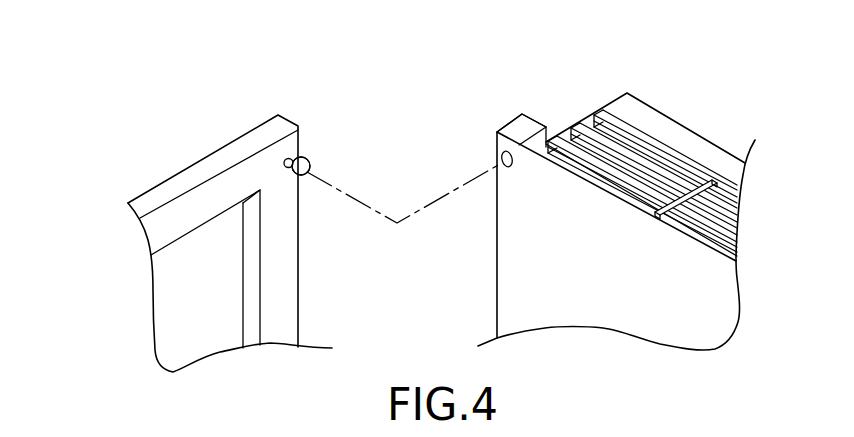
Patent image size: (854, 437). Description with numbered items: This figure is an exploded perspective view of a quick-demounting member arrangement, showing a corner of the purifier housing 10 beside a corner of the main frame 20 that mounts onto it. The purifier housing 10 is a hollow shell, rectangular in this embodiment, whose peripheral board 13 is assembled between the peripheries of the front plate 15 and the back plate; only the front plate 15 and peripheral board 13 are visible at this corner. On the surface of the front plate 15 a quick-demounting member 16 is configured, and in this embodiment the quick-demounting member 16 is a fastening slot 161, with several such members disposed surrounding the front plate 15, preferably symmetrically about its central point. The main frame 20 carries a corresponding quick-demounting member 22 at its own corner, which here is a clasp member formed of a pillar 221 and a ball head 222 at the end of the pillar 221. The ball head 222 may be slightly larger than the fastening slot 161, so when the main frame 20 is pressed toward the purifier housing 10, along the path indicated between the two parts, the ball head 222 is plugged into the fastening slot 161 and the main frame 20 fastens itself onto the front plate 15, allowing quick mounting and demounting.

The purifier housing 10 is at (724, 121).
The peripheral board 13 is at (614, 115).
The front plate 15 is at (580, 195).
The quick-demounting member 16 is at (493, 129).
The fastening slot 161 is at (507, 131).
The main frame 20 is at (203, 178).
The quick-demounting member 22 is at (312, 184).
The pillar 221 is at (290, 158).
The ball head 222 is at (311, 159).